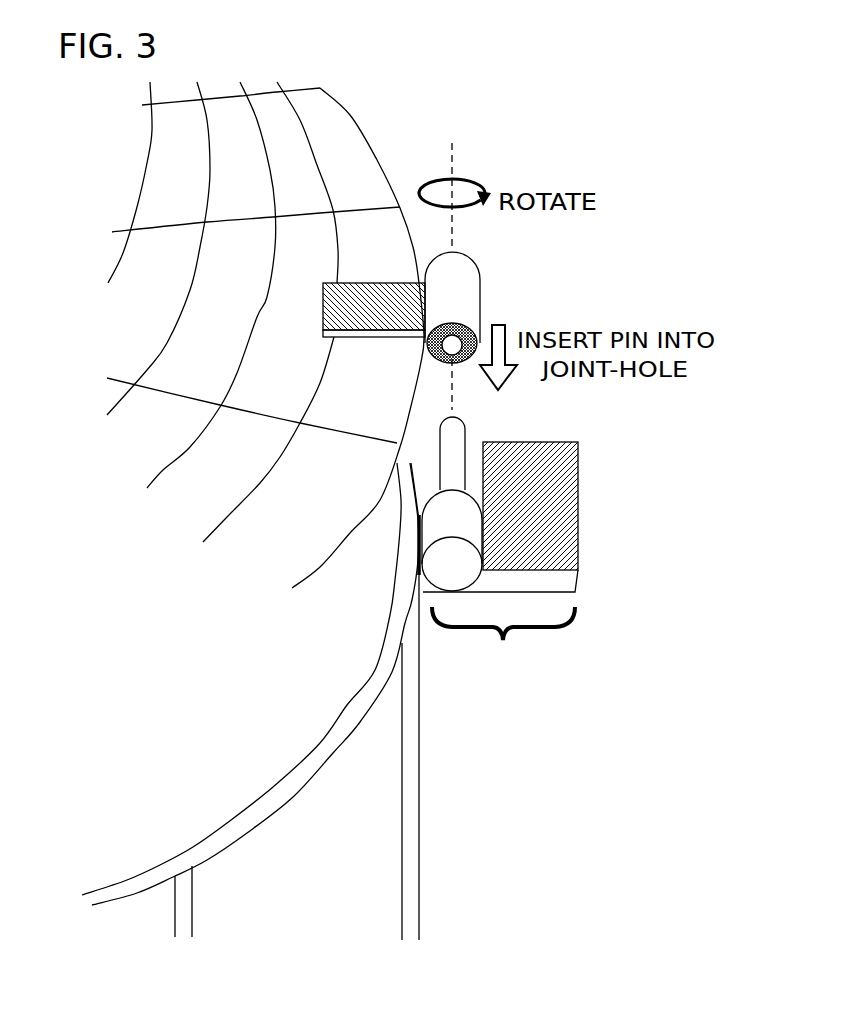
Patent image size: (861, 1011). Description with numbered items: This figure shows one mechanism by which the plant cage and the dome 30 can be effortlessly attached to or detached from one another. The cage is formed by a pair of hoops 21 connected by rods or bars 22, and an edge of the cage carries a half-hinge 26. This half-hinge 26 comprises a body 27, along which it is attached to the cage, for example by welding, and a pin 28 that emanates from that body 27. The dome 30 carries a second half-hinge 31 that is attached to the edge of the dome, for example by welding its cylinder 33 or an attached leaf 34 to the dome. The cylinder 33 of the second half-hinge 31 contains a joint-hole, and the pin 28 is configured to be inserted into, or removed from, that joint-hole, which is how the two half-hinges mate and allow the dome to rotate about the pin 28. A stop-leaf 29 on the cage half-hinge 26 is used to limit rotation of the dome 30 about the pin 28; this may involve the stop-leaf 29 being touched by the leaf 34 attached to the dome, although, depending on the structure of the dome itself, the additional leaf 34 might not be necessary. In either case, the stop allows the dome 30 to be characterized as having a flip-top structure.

The hoop 21 is at (347, 705).
The rod or bar 22 is at (422, 766).
The half-hinge 26 is at (500, 543).
The body 27 is at (465, 526).
The pin 28 is at (468, 435).
The stop-leaf 29 is at (543, 516).
The dome 30 is at (350, 115).
The second half-hinge 31 is at (435, 307).
The cylinder 33 is at (465, 305).
The leaf 34 is at (384, 318).